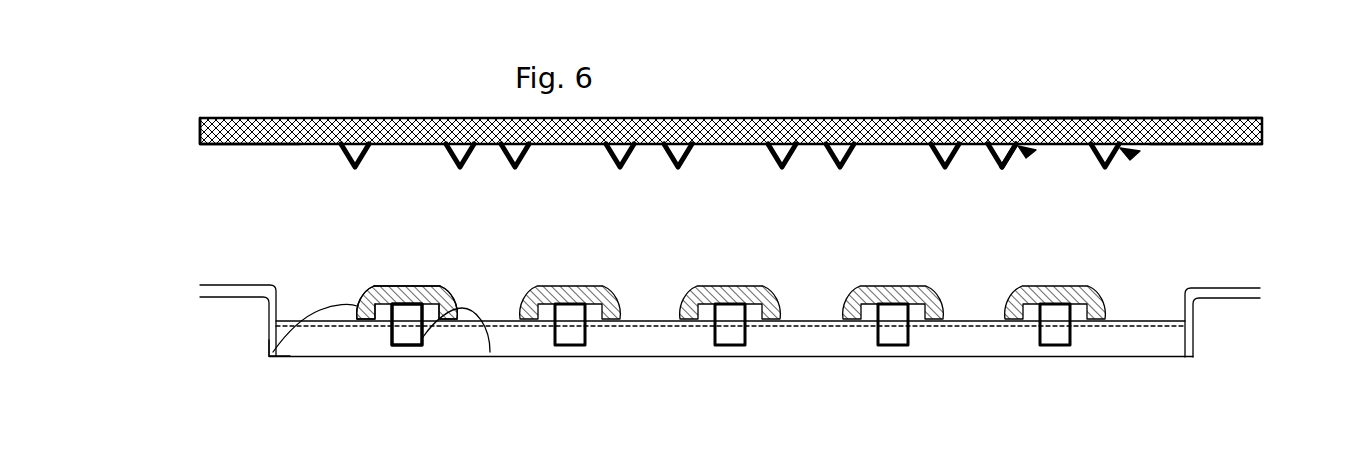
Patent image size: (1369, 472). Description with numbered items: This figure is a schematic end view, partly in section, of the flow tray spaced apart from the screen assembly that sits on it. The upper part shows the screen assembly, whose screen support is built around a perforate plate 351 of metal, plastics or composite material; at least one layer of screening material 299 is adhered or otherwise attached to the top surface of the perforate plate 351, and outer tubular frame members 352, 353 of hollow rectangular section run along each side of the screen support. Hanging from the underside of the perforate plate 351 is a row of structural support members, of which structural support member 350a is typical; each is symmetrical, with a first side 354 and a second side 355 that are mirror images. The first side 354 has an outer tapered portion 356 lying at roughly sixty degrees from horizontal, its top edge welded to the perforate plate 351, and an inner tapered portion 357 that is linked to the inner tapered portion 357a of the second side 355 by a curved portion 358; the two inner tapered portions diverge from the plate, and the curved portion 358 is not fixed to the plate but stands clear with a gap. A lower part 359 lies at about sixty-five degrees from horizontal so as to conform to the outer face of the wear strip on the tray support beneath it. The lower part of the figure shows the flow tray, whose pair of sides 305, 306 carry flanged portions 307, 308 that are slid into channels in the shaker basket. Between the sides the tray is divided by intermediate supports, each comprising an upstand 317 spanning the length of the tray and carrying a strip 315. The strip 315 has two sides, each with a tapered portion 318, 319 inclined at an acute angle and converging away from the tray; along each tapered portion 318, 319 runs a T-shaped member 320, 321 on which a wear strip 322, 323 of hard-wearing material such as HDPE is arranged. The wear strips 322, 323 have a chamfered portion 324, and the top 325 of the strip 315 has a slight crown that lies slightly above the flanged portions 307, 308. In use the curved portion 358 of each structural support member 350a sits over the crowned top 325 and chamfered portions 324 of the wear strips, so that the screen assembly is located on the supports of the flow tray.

The layer of screening material 299 is at (888, 118).
The perforate plate 351 is at (1157, 118).
The outer tubular frame member 352 is at (1222, 145).
The outer tubular frame member 353 is at (243, 144).
The curved portion 358 is at (1058, 118).
The structural support member 350a is at (1130, 150).
The outer tapered portion 356 is at (992, 147).
The first side 354 is at (996, 156).
The lower part 359 is at (1017, 157).
The inner tapered portion 357 is at (1005, 160).
The inner tapered portion 357a is at (1097, 160).
The second side 355 is at (1112, 155).
The flanged portion 307 is at (232, 280).
The side 305 is at (240, 297).
The flanged portion 308 is at (1240, 288).
The side 306 is at (1222, 300).
The wear strip 322 is at (266, 345).
The strip 315 is at (396, 278).
The top 325 is at (425, 282).
The chamfered portion 324 is at (370, 292).
The T-shaped member 320 is at (367, 303).
The T-shaped member 321 is at (465, 295).
The upstand 317 is at (392, 336).
The tapered portion 318 is at (387, 318).
The tapered portion 319 is at (423, 336).
The wear strip 323 is at (492, 352).